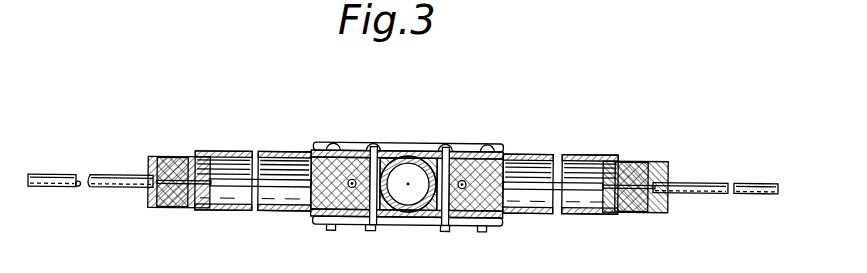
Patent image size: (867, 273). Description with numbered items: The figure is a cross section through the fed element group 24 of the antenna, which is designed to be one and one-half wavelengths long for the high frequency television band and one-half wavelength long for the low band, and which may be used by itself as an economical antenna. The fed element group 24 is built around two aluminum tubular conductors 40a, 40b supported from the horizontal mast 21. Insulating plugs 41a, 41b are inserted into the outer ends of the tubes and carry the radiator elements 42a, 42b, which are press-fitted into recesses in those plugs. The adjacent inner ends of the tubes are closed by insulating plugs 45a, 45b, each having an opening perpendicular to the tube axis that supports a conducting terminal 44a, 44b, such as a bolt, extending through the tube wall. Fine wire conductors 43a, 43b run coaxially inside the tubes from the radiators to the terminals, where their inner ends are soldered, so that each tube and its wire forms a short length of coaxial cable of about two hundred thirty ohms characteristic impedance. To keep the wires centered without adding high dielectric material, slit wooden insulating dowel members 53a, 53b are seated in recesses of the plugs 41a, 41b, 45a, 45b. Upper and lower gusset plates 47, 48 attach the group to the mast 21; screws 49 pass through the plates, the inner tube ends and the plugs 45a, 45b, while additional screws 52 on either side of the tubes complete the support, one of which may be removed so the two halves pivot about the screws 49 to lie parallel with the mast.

The horizontal mast 21 is at (387, 225).
The fed element group 24 is at (453, 174).
The tubular conductor 40a is at (590, 185).
The tubular conductor 40b is at (227, 154).
The insulating plug 41a is at (642, 160).
The insulating plug 41b is at (163, 159).
The radiator element 42a is at (755, 180).
The radiator element 42b is at (43, 181).
The fine wire conductor 43a is at (637, 206).
The fine wire conductor 43b is at (175, 206).
The terminal 44a is at (462, 213).
The terminal 44b is at (360, 198).
The insulating plug 45a is at (518, 156).
The insulating plug 45b is at (302, 158).
The upper gusset plate 47 is at (418, 156).
The lower gusset plate 48 is at (425, 217).
The screw 49 is at (373, 147).
The screw 52 is at (328, 144).
The insulating dowel member 53a is at (535, 192).
The insulating dowel member 53b is at (292, 191).